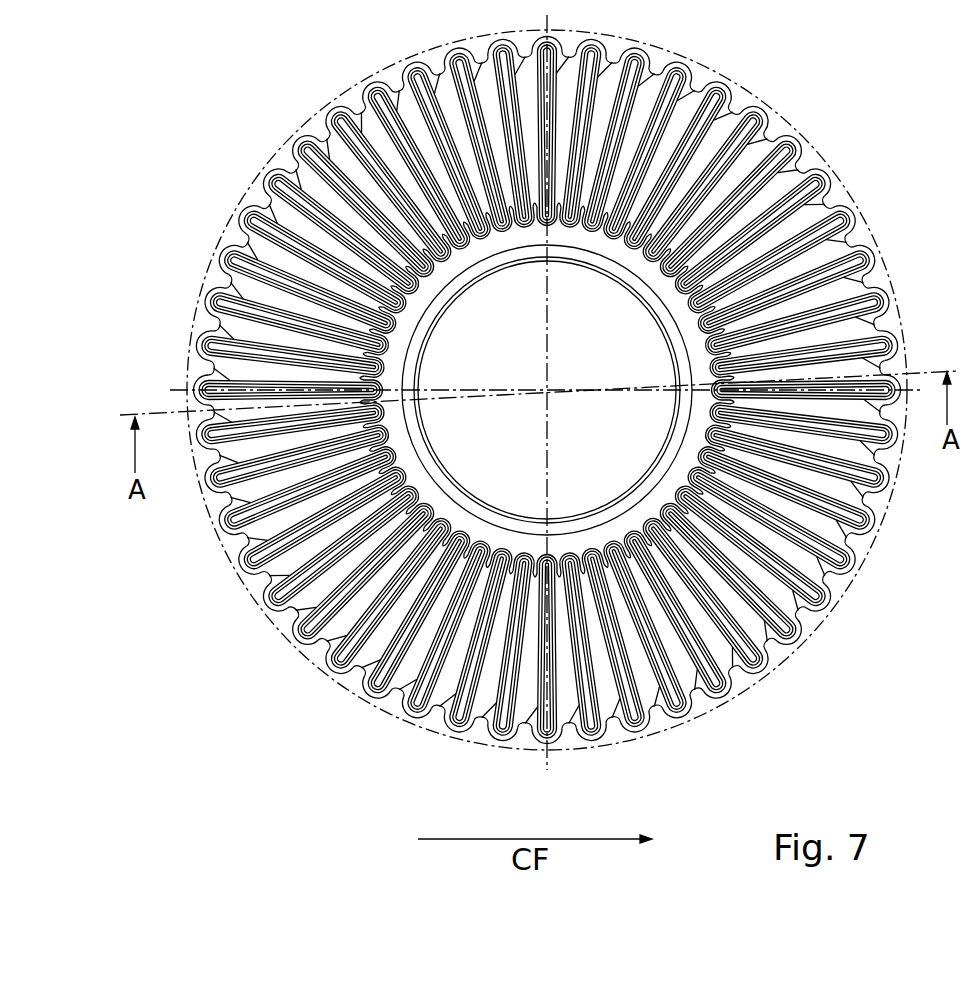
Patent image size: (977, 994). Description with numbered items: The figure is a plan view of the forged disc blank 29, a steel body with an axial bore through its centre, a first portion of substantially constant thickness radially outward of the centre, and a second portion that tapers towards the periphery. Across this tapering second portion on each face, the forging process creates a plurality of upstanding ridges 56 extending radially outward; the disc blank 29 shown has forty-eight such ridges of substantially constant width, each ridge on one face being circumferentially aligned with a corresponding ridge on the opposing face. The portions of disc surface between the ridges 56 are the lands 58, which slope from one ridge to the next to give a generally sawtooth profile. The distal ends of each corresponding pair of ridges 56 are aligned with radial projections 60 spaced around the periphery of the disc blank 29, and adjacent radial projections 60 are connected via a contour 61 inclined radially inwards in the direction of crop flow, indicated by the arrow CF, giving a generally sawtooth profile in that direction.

The disc blank 29 is at (286, 711).
The ridges 56 is at (817, 572).
The lands 58 is at (653, 682).
The radial projections 60 is at (502, 742).
The contour 61 is at (707, 707).